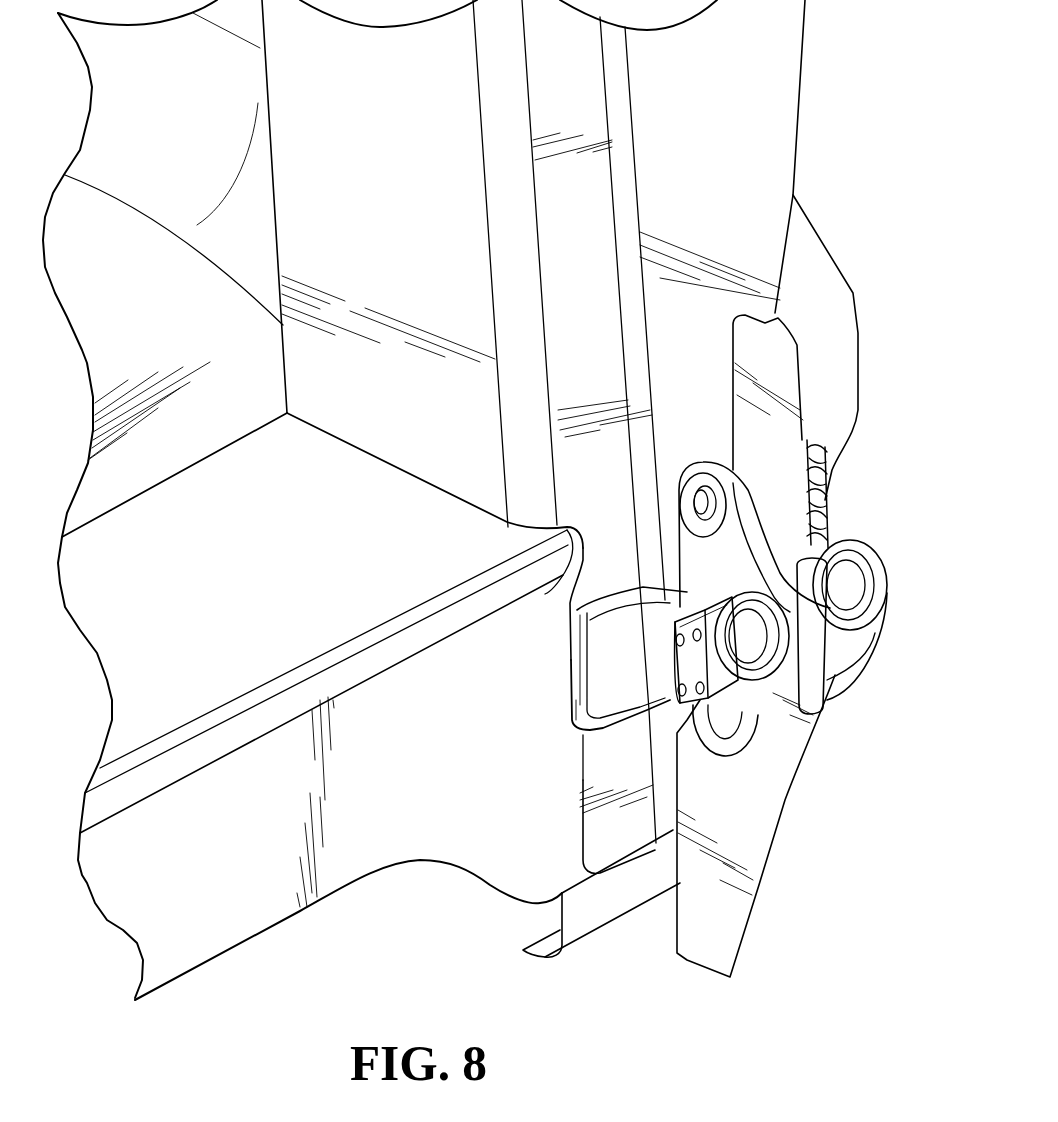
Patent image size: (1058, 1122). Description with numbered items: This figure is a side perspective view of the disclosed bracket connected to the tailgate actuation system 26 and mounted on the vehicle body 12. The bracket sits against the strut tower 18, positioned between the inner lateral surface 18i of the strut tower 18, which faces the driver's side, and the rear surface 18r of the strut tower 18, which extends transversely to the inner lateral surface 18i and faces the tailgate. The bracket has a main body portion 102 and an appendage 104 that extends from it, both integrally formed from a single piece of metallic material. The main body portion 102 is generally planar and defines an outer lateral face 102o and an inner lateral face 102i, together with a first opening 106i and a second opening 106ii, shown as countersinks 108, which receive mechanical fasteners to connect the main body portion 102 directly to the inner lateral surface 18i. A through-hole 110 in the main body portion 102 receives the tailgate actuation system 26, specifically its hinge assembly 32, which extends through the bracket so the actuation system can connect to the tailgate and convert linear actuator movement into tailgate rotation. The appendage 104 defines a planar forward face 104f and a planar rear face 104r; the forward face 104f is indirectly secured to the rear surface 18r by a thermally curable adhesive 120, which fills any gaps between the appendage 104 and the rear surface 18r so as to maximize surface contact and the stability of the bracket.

The vehicle body 12 is at (832, 148).
The strut tower 18 is at (731, 150).
The rear surface 18r is at (588, 368).
The inner lateral surface 18i is at (713, 385).
The tailgate actuation system 26 is at (857, 527).
The hinge assembly 32 is at (855, 693).
The main body portion 102 is at (778, 541).
The outer lateral face 102o is at (770, 547).
The inner lateral face 102i is at (725, 582).
The appendage 104 is at (607, 741).
The forward face 104f is at (637, 587).
The rear face 104r is at (603, 670).
The first opening 106i is at (612, 628).
The second opening 106ii is at (717, 758).
The countersink 108 is at (703, 546).
The through-hole 110 is at (760, 642).
The thermally curable adhesive 120 is at (580, 727).